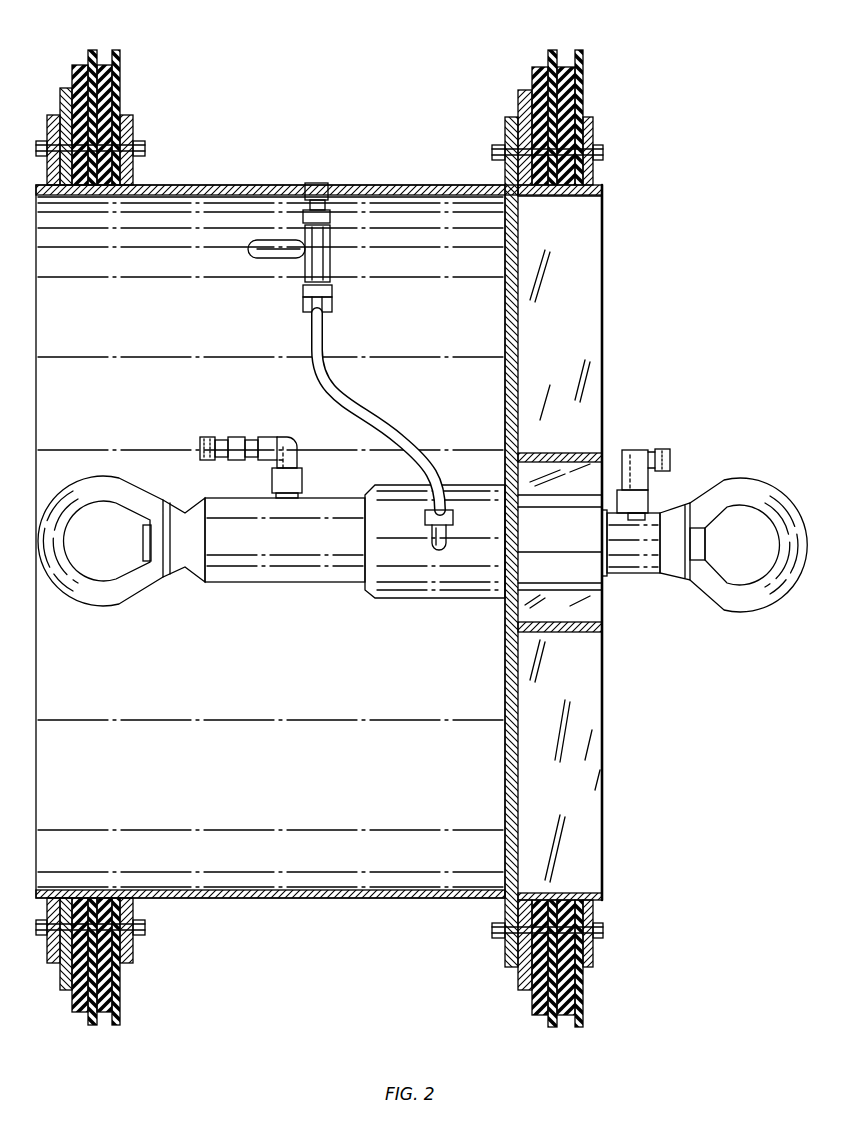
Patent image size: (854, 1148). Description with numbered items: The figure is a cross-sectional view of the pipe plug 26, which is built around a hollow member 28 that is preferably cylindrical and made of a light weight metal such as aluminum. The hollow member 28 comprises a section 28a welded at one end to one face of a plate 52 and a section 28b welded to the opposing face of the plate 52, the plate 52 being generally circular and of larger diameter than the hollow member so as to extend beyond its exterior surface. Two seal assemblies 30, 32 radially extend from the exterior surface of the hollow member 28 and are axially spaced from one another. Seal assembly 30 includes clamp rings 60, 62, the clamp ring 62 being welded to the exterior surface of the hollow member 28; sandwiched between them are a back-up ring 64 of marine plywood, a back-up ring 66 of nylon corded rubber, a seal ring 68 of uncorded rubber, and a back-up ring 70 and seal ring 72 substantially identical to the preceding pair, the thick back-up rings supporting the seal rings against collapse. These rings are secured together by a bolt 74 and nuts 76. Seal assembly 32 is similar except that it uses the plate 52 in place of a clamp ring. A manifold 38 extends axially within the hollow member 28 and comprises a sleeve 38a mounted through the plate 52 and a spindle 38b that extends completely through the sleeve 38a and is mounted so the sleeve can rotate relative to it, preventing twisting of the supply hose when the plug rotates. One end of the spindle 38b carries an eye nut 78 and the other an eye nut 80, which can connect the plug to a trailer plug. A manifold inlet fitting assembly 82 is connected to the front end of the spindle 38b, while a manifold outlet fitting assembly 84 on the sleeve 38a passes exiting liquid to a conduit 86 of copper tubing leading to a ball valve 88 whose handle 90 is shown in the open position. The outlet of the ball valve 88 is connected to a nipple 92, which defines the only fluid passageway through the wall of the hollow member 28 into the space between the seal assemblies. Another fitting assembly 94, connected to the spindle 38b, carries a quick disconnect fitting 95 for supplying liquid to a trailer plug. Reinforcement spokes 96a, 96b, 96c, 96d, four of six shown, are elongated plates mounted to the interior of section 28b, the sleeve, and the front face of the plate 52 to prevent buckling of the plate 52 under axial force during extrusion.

The pipe plug 26 is at (392, 62).
The hollow member 28 is at (366, 182).
The section 28a is at (404, 185).
The section 28b is at (542, 197).
The seal assembly 30 is at (116, 512).
The seal assembly 32 is at (565, 40).
The manifold 38 is at (422, 543).
The sleeve 38a is at (462, 484).
The spindle 38b is at (326, 490).
The plate 52 is at (524, 265).
The clamp ring 60 is at (53, 114).
The clamp ring 62 is at (128, 114).
The back-up ring 64 is at (66, 87).
The back-up ring 66 is at (80, 64).
The seal ring 68 is at (92, 49).
The back-up ring 70 is at (105, 64).
The seal ring 72 is at (117, 50).
The bolt 74 is at (146, 150).
The nuts 76 is at (140, 142).
The eye nut 78 is at (774, 480).
The eye nut 80 is at (82, 474).
The manifold inlet fitting assembly 82 is at (630, 449).
The manifold outlet fitting assembly 84 is at (430, 532).
The conduit 86 is at (372, 404).
The ball valve 88 is at (303, 270).
The handle 90 is at (262, 240).
The nipple 92 is at (303, 200).
The fitting assembly 94 is at (280, 436).
The quick disconnect fitting 95 is at (208, 436).
The reinforcement spoke 96a is at (604, 326).
The reinforcement spoke 96b is at (566, 452).
The reinforcement spoke 96c is at (562, 635).
The reinforcement spoke 96d is at (604, 716).